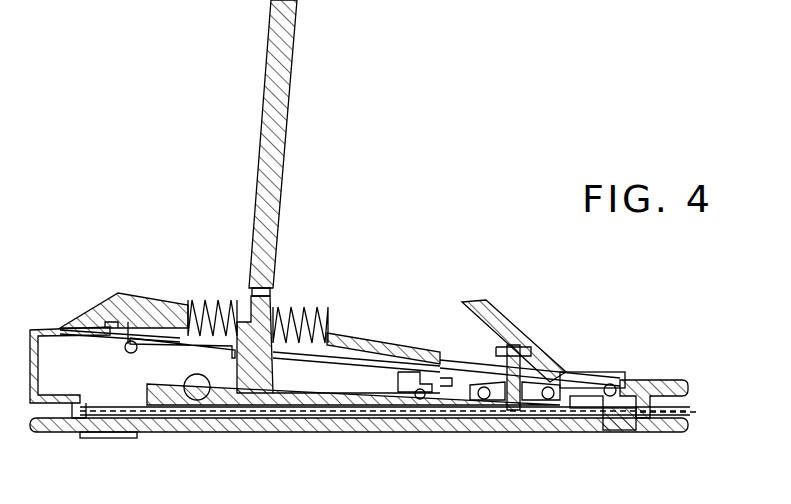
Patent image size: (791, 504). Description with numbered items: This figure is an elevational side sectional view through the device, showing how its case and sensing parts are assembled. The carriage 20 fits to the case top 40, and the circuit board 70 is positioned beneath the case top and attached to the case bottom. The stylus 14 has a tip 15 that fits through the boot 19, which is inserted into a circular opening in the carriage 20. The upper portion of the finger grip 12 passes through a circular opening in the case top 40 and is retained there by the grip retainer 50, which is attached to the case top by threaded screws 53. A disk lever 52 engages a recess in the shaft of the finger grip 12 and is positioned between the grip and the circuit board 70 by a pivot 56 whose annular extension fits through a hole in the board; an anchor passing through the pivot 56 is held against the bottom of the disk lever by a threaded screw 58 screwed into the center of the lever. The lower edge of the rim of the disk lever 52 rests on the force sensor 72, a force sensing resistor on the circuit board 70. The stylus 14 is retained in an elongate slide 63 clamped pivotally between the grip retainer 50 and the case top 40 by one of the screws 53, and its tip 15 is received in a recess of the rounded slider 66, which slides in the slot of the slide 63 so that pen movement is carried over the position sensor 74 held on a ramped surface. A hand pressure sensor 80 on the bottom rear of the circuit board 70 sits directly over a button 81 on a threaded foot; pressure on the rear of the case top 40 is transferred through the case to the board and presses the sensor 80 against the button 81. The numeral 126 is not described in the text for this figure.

The stylus 14 is at (298, 58).
The tip 15 is at (272, 302).
The rounded slider 66 is at (245, 325).
The carriage 20 is at (127, 292).
The case top 40 is at (50, 327).
The position sensor 74 is at (203, 410).
The circuit board 70 is at (300, 408).
The force sensor 72 is at (435, 400).
The boot 19 is at (312, 330).
The elongate slide 63 is at (352, 337).
The threaded screws 53 is at (410, 393).
The finger grip 12 is at (518, 322).
The disk lever 52 is at (458, 360).
The pivot 56 is at (493, 413).
The threaded screw 58 is at (513, 417).
The grip retainer 50 is at (583, 380).
The clamp 126 is at (640, 383).
The button 81 is at (693, 413).
The hand pressure sensor 80 is at (573, 430).